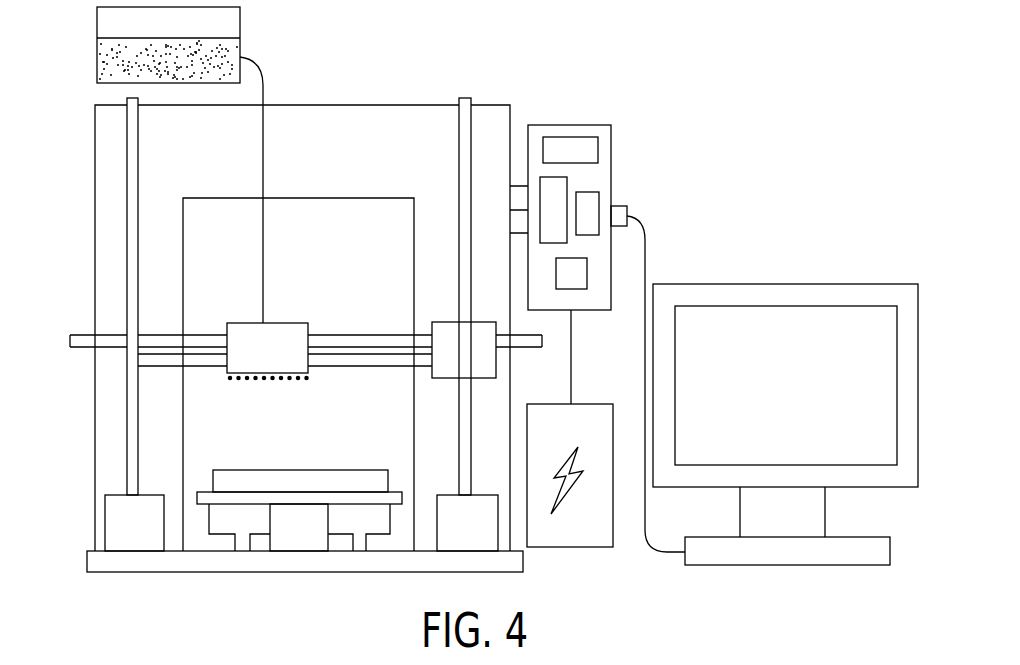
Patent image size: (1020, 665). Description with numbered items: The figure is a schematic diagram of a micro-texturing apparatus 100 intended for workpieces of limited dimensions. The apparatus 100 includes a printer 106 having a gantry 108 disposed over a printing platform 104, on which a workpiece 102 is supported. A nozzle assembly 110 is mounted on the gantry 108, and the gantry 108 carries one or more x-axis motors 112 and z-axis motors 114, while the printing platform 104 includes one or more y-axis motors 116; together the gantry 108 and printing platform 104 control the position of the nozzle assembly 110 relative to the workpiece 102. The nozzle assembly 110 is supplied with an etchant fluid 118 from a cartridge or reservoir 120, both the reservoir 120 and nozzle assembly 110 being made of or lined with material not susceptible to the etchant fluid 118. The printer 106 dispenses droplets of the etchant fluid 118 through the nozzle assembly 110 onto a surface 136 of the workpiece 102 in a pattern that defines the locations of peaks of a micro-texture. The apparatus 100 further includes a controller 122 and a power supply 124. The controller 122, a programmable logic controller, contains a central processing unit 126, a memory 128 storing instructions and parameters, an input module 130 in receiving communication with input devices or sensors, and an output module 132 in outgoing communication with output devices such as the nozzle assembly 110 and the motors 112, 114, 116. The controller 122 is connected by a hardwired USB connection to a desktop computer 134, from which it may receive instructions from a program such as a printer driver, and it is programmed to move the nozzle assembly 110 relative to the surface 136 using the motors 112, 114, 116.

The micro-texturing apparatus 100 is at (707, 87).
The workpiece 102 is at (316, 476).
The printing platform 104 is at (228, 520).
The printer 106 is at (104, 212).
The gantry 108 is at (73, 342).
The nozzle assembly 110 is at (280, 320).
The x-axis motor 112 is at (452, 338).
The z-axis motor 114 is at (105, 522).
The y-axis motor 116 is at (303, 520).
The etchant fluid 118 is at (110, 62).
The reservoir 120 is at (97, 25).
The controller 122 is at (568, 124).
The power supply 124 is at (594, 524).
The central processing unit 126 is at (578, 277).
The memory 128 is at (585, 152).
The input module 130 is at (590, 207).
The output module 132 is at (560, 188).
The desktop computer 134 is at (824, 292).
The surface 136 is at (228, 468).